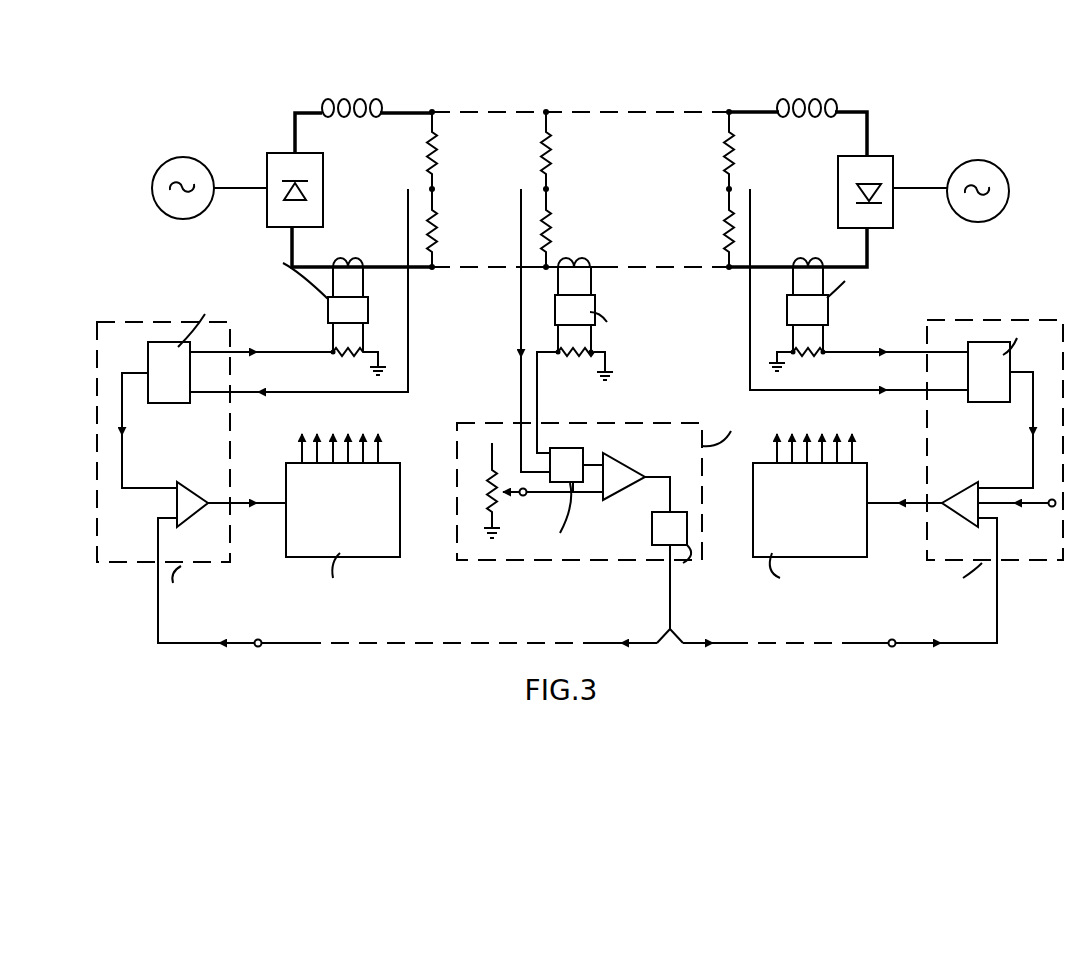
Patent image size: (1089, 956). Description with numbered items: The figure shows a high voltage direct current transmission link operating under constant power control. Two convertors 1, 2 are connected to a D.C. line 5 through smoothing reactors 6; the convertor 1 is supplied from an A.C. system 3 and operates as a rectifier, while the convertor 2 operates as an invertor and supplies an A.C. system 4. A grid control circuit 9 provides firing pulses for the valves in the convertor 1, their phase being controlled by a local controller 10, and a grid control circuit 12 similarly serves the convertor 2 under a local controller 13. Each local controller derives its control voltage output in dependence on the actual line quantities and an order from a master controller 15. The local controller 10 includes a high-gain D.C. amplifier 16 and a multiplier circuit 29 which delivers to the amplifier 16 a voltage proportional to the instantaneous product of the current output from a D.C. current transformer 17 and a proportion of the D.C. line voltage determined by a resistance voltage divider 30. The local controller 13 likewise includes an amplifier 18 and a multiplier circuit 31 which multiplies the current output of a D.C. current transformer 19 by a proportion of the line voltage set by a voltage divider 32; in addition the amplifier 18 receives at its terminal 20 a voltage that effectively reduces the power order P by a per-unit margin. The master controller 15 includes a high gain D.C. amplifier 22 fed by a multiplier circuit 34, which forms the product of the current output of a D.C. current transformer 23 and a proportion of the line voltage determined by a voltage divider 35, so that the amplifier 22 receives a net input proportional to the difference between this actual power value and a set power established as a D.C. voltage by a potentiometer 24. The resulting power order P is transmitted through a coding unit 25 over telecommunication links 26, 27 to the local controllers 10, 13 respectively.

The convertor 1 is at (328, 202).
The convertor 2 is at (815, 205).
The A.C. system 3 is at (130, 202).
The A.C. system 4 is at (1016, 205).
The D.C. line 5 is at (583, 111).
The smoothing reactor 6 is at (343, 96).
The grid control circuit 9 is at (336, 516).
The local controller 10 is at (140, 317).
The grid control circuit 12 is at (802, 516).
The local controller 13 is at (1027, 317).
The master controller 15 is at (668, 423).
The high-gain D.C. amplifier 16 is at (195, 492).
The D.C. current transformer 17 is at (328, 304).
The amplifier 18 is at (938, 492).
The D.C. current transformer 19 is at (828, 308).
The terminal 20 is at (1051, 508).
The high gain D.C. amplifier 22 is at (628, 467).
The D.C. current transformer 23 is at (596, 308).
The potentiometer 24 is at (503, 506).
The coding unit 25 is at (659, 540).
The telecommunication link 26 is at (390, 642).
The telecommunication link 27 is at (851, 642).
The multiplier circuit 29 is at (158, 383).
The resistance voltage divider 30 is at (441, 189).
The multiplier circuit 31 is at (978, 383).
The voltage divider 32 is at (723, 188).
The multiplier circuit 34 is at (557, 478).
The voltage divider 35 is at (558, 192).